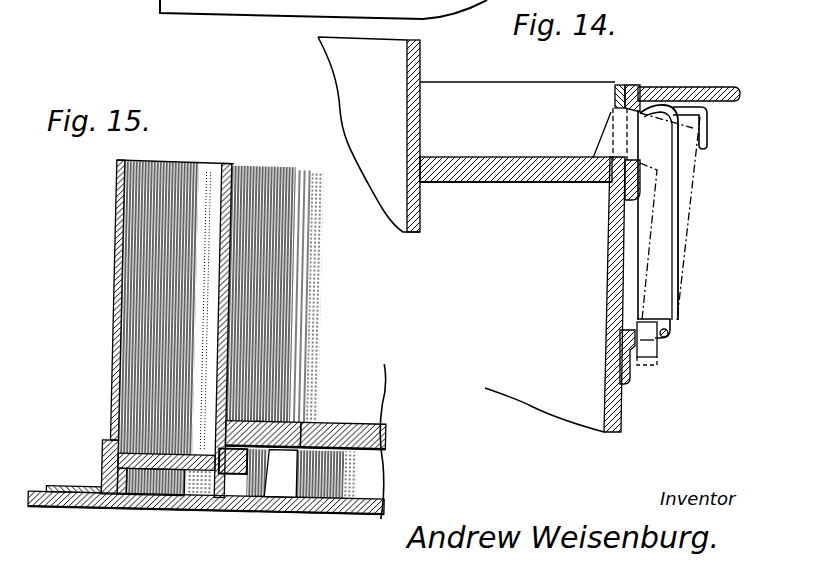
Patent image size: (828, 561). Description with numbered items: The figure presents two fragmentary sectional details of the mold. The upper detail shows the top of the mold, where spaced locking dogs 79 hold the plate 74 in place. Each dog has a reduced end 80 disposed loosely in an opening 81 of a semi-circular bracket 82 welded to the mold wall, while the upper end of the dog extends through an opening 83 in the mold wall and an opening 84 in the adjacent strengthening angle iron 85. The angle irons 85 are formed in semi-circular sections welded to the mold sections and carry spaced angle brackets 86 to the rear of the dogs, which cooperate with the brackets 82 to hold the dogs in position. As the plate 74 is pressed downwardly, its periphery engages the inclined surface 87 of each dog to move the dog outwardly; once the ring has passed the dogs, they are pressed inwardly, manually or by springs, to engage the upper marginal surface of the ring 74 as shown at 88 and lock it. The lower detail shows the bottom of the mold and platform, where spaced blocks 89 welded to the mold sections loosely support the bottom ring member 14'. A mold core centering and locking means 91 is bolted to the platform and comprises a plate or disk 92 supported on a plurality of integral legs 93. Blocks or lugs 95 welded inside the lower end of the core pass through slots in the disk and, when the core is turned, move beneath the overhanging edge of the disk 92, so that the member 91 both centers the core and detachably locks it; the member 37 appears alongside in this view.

In FIG. 14, the plate 74 is at (517, 170).
In FIG. 14, the locking dogs 79 is at (660, 245).
In FIG. 14, the reduced end 80 is at (657, 348).
In FIG. 14, the openings 81 is at (650, 320).
In FIG. 14, the semi-circular brackets 82 is at (622, 357).
In FIG. 14, the openings in the mold wall 83 is at (617, 106).
In FIG. 14, the openings in the angle irons 84 is at (620, 140).
In FIG. 14, the strengthening angle irons 85 is at (700, 88).
In FIG. 15, the strengthening angle irons 85 is at (74, 488).
In FIG. 14, the angle brackets 86 is at (708, 124).
In FIG. 14, the inclined surface 87 is at (603, 128).
In FIG. 14, the upper marginal surface engagement 88 is at (587, 185).
In FIG. 15, the post 37 is at (216, 325).
In FIG. 15, the spaced blocks 89 is at (118, 497).
In FIG. 15, the bottom ring member 14' is at (155, 512).
In FIG. 15, the blocks or lugs 95 is at (237, 472).
In FIG. 15, the integral legs 93 is at (285, 483).
In FIG. 15, the plate or disk 92 is at (307, 421).
In FIG. 15, the mold core centering and locking means 91 is at (367, 412).